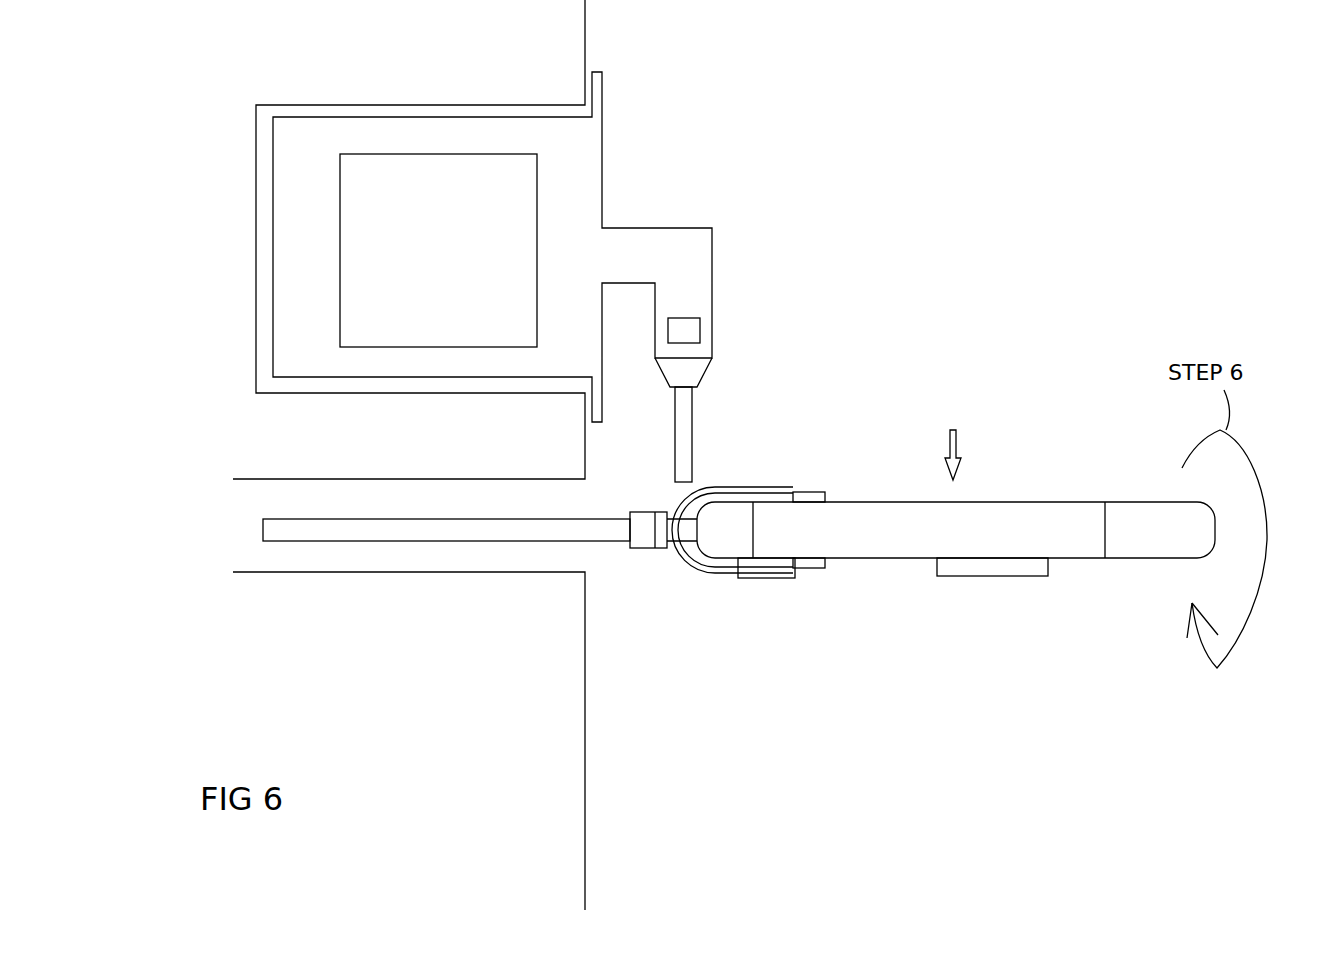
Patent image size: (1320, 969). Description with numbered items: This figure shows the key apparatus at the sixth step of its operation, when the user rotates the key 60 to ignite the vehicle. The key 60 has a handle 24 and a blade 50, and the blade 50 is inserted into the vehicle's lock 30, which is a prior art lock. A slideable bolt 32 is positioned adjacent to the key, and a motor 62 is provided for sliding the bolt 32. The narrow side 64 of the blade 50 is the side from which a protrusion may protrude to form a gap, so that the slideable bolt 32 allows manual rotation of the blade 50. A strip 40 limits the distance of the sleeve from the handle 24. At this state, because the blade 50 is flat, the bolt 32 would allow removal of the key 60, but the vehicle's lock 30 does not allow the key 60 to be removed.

The key's handle 24 is at (1080, 542).
The vehicle's lock 30 is at (422, 558).
The slideable bolt 32 is at (683, 447).
The strip 40 is at (735, 490).
The key's blade 50 is at (505, 525).
The vehicle's key 60 is at (947, 440).
The motor 62 is at (690, 332).
The narrow side of the key's blade 64 is at (602, 527).